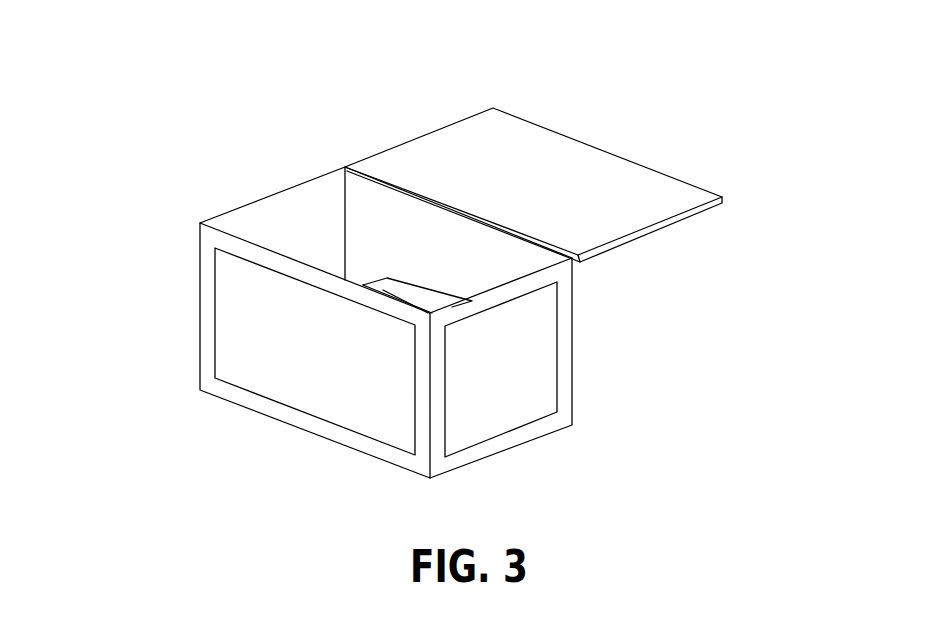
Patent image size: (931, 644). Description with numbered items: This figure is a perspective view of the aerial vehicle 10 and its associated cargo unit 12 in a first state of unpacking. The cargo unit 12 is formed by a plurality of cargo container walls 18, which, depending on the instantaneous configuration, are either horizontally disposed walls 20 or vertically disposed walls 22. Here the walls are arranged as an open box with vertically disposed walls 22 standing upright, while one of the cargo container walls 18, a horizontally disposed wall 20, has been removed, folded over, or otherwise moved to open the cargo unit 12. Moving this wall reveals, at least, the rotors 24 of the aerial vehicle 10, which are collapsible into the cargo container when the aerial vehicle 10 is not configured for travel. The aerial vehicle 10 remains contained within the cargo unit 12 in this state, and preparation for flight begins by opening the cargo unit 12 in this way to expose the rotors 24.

The aerial vehicle 10 is at (513, 182).
The cargo unit 12 is at (632, 112).
The cargo container walls 18 is at (407, 293).
The horizontally disposed wall 20 is at (617, 198).
The vertically disposed wall 22 is at (238, 312).
The rotors 24 is at (407, 291).